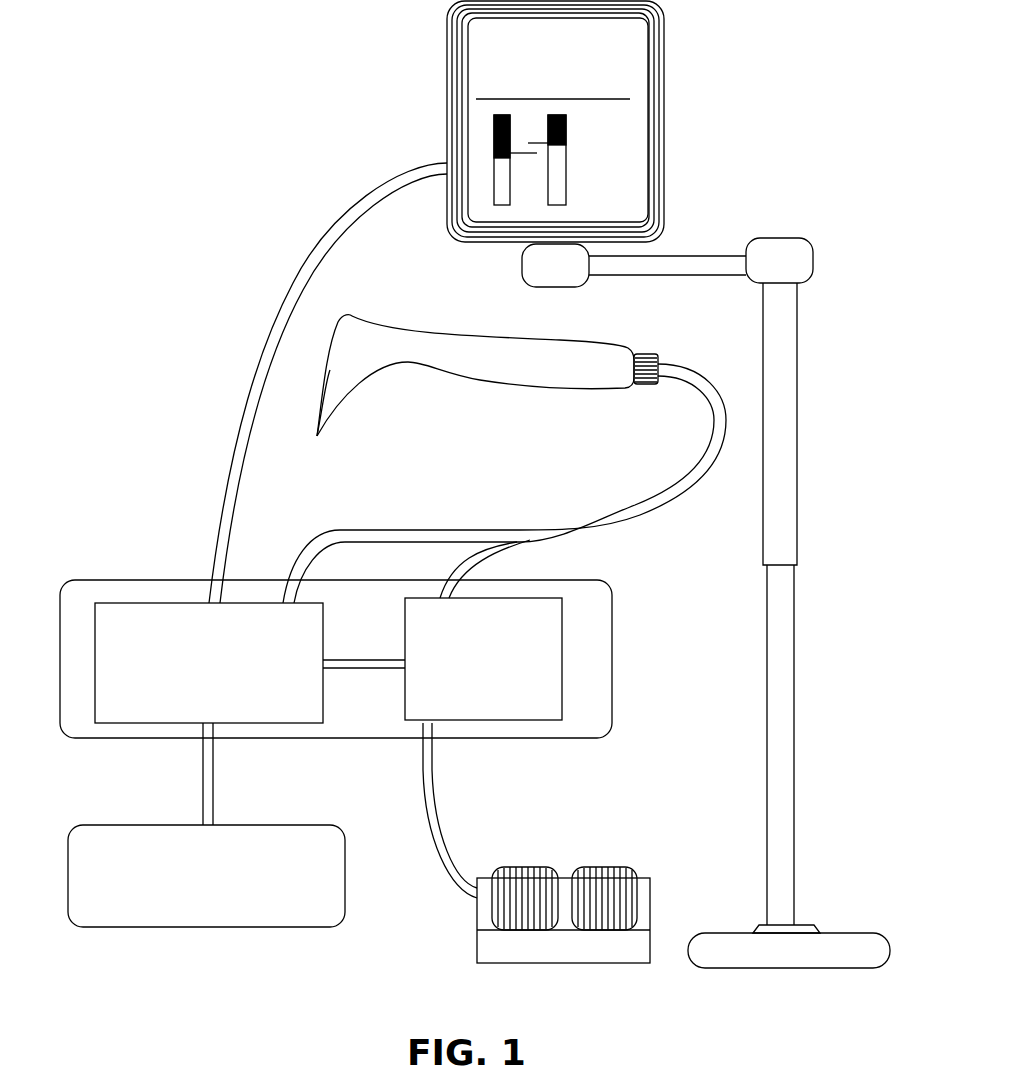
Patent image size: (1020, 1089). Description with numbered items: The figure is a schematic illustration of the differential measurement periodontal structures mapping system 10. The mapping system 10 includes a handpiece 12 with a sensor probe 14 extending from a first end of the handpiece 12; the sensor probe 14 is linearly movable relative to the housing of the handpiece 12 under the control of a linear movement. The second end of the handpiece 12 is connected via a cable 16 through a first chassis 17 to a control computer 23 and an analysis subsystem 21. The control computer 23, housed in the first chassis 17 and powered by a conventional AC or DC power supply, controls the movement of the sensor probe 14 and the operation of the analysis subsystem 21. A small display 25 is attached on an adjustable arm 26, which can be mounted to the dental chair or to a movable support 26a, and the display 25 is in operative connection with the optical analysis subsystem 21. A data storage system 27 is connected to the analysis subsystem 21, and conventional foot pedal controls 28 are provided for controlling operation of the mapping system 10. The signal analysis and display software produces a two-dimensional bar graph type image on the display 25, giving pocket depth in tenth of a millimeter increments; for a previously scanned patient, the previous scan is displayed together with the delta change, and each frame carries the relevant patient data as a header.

The mapping system 10 is at (795, 172).
The handpiece 12 is at (375, 325).
The sensor probe 14 is at (318, 434).
The cable 16 is at (688, 484).
The first chassis 17 is at (612, 645).
The analysis subsystem 21 is at (150, 601).
The control computer 23 is at (562, 696).
The display 25 is at (665, 65).
The adjustable arm 26 is at (668, 253).
The movable support 26a is at (800, 695).
The data storage system 27 is at (190, 929).
The foot pedal controls 28 is at (600, 867).